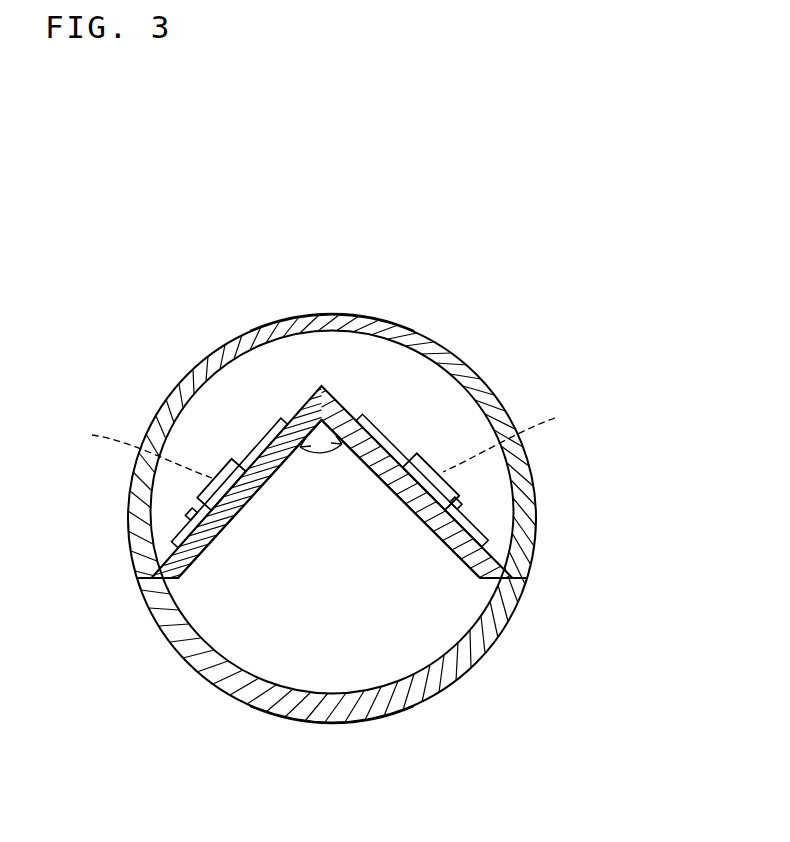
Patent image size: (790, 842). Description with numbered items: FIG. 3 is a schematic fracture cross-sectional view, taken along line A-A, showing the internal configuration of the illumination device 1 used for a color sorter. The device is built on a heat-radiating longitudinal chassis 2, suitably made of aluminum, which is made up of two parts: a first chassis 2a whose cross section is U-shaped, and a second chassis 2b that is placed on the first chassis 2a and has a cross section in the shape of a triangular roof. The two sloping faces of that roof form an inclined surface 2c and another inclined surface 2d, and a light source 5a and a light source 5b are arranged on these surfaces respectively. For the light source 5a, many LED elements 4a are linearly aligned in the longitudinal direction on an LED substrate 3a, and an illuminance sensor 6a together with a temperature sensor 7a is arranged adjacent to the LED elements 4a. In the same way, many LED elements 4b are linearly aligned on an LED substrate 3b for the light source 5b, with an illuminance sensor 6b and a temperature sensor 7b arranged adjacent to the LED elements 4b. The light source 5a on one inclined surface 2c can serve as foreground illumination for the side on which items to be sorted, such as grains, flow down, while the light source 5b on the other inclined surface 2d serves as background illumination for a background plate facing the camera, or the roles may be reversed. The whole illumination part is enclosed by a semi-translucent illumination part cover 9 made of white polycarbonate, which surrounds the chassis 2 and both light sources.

The illumination device 1 is at (499, 253).
The chassis 2 is at (466, 675).
The first chassis 2a is at (343, 721).
The second chassis 2b is at (293, 469).
The inclined surface 2c is at (442, 534).
The inclined surface 2d is at (198, 570).
The LED substrate 3a is at (510, 575).
The LED substrate 3b is at (157, 575).
The LED elements 4a is at (432, 450).
The LED elements 4b is at (230, 457).
The light source 5a is at (412, 396).
The light source 5b is at (257, 398).
The illuminance sensor 6a is at (515, 433).
The illuminance sensor 6b is at (133, 445).
The temperature sensor 7a is at (465, 507).
The temperature sensor 7b is at (191, 509).
The illumination part cover 9 is at (326, 326).